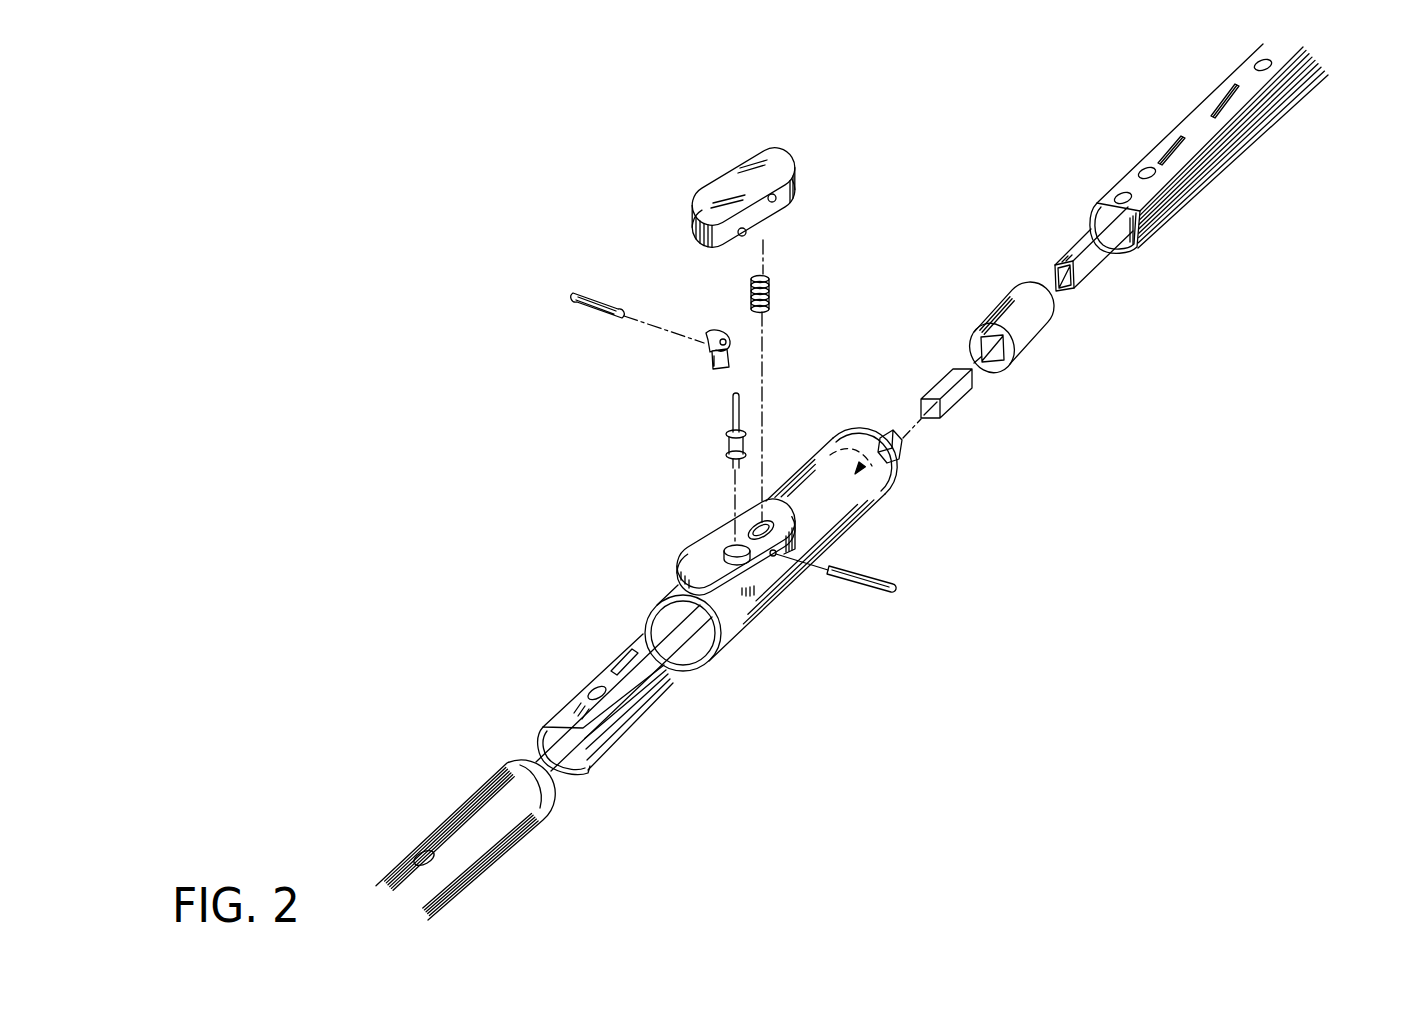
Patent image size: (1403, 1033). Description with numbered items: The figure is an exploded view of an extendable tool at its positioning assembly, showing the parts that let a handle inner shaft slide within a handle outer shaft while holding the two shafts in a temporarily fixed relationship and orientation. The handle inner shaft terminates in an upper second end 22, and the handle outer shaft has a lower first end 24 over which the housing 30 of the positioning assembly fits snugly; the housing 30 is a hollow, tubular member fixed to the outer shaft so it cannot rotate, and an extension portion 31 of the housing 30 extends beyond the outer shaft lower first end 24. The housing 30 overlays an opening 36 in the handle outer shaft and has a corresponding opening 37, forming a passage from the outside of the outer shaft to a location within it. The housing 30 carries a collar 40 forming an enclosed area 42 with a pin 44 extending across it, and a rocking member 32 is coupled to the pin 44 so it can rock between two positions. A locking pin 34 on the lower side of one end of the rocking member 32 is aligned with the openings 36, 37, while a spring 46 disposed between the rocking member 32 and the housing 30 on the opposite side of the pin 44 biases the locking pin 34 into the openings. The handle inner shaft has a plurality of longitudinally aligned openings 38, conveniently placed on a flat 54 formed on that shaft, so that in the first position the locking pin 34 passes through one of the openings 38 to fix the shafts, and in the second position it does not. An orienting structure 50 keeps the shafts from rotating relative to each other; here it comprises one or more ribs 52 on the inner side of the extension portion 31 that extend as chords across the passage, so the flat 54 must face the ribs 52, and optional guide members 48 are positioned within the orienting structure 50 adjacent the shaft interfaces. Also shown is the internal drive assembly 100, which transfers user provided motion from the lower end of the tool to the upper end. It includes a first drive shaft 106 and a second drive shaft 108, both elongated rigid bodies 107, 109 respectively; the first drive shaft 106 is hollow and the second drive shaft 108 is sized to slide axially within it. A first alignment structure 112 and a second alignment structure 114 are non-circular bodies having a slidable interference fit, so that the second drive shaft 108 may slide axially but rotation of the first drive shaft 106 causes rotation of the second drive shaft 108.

The handle inner shaft upper second end 22 is at (1106, 196).
The handle outer shaft lower first end 24 is at (488, 802).
The housing 30 is at (680, 580).
The extension portion 31 is at (840, 433).
The rocking member 32 is at (712, 190).
The locking pin 34 is at (732, 420).
The opening 36 is at (414, 856).
The opening 37 is at (726, 553).
The plurality of openings 38 is at (1141, 169).
The collar 40 is at (765, 578).
The enclosed area 42 is at (728, 532).
The pin 44 is at (586, 306).
The spring 46 is at (771, 298).
The guide members 48 is at (1018, 338).
The orienting structure 50 is at (1218, 254).
The ribs 52 is at (880, 500).
The flat 54 is at (1196, 121).
The internal drive assembly 100 is at (1126, 336).
The first drive shaft 106 is at (1081, 238).
The rigid body 107 is at (1098, 260).
The second drive shaft 108 is at (700, 672).
The rigid body 109 is at (558, 770).
The first alignment structure 112 is at (1056, 263).
The second alignment structure 114 is at (667, 632).